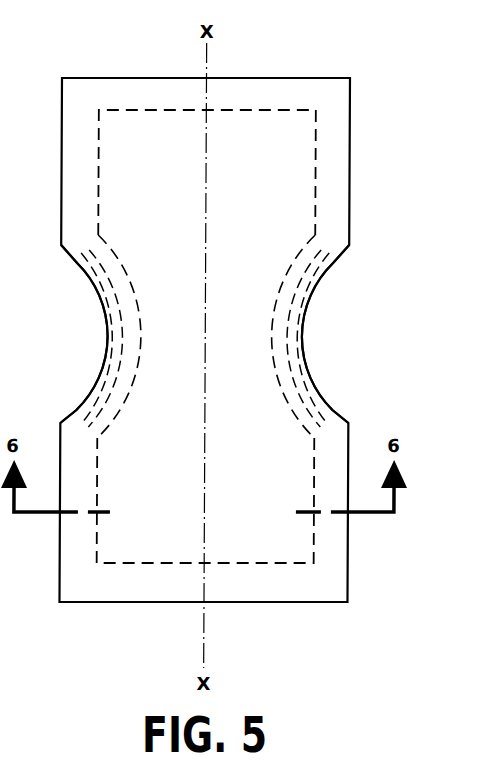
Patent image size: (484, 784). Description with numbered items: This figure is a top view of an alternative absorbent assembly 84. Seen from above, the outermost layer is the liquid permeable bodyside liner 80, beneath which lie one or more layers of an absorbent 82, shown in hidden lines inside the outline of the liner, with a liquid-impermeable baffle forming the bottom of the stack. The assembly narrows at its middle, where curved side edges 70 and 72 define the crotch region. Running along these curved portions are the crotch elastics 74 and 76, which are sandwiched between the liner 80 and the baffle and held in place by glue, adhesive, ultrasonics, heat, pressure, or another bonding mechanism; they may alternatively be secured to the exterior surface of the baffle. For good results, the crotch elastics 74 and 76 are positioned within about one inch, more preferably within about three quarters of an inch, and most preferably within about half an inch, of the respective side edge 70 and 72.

The side edge 70 is at (100, 382).
The side edge 72 is at (318, 395).
The crotch elastic 74 is at (115, 308).
The crotch elastic 76 is at (309, 291).
The liquid permeable bodyside liner 80 is at (300, 79).
The absorbent 82 is at (302, 206).
The absorbent assembly 84 is at (418, 78).